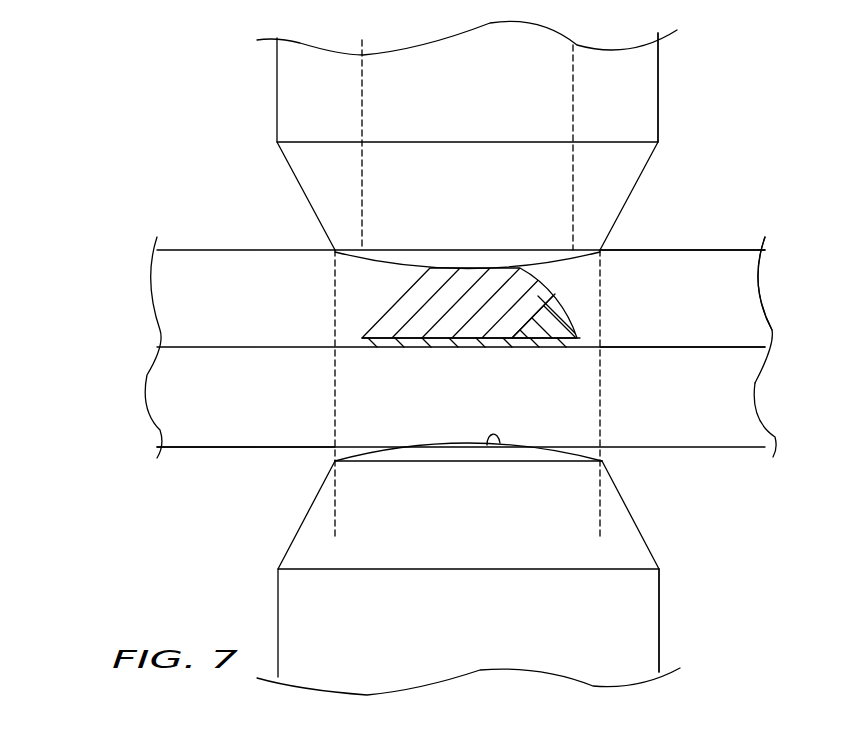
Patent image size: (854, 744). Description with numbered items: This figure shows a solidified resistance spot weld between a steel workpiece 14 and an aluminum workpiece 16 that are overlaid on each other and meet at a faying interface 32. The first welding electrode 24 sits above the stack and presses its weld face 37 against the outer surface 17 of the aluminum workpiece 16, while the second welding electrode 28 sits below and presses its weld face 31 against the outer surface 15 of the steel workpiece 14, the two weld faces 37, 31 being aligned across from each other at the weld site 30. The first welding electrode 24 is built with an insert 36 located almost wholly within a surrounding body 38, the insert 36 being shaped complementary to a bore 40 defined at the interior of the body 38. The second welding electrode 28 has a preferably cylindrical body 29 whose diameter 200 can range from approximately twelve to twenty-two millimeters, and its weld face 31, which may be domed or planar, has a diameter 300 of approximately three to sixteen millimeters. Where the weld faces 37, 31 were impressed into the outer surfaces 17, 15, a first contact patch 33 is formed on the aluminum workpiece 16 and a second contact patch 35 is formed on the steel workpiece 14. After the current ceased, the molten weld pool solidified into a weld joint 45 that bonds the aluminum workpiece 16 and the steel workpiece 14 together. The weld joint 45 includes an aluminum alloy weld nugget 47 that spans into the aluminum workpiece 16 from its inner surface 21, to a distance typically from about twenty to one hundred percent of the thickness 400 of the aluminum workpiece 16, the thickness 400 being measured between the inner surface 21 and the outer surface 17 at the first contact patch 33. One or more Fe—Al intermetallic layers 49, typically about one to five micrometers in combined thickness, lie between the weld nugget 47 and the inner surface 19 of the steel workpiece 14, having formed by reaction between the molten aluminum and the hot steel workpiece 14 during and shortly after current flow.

The steel workpiece 14 is at (720, 422).
The outer surface of the steel workpiece 15 is at (195, 450).
The aluminum workpiece 16 is at (727, 267).
The outer surface of the aluminum workpiece 17 is at (668, 250).
The inner surface of the steel workpiece 19 is at (725, 345).
The inner surface of the aluminum workpiece 21 is at (772, 352).
The first welding electrode 24 is at (460, 141).
The second welding electrode 28 is at (460, 564).
The body 29 is at (660, 588).
The weld site 30 is at (335, 384).
The weld face 31 is at (500, 443).
The faying interface 32 is at (588, 338).
The first contact patch 33 is at (405, 265).
The second contact patch 35 is at (432, 448).
The insert 36 is at (576, 85).
The weld face of the first welding electrode 37 is at (555, 271).
The body of the first welding electrode 38 is at (631, 121).
The bore 40 is at (365, 80).
The weld joint 45 is at (377, 298).
The aluminum alloy weld nugget 47 is at (520, 306).
The Fe—Al intermetallic layer 49 is at (457, 342).
The diameter of the body 200 is at (468, 629).
The diameter of the weld face 300 is at (592, 519).
The thickness of the aluminum workpiece 400 is at (683, 258).